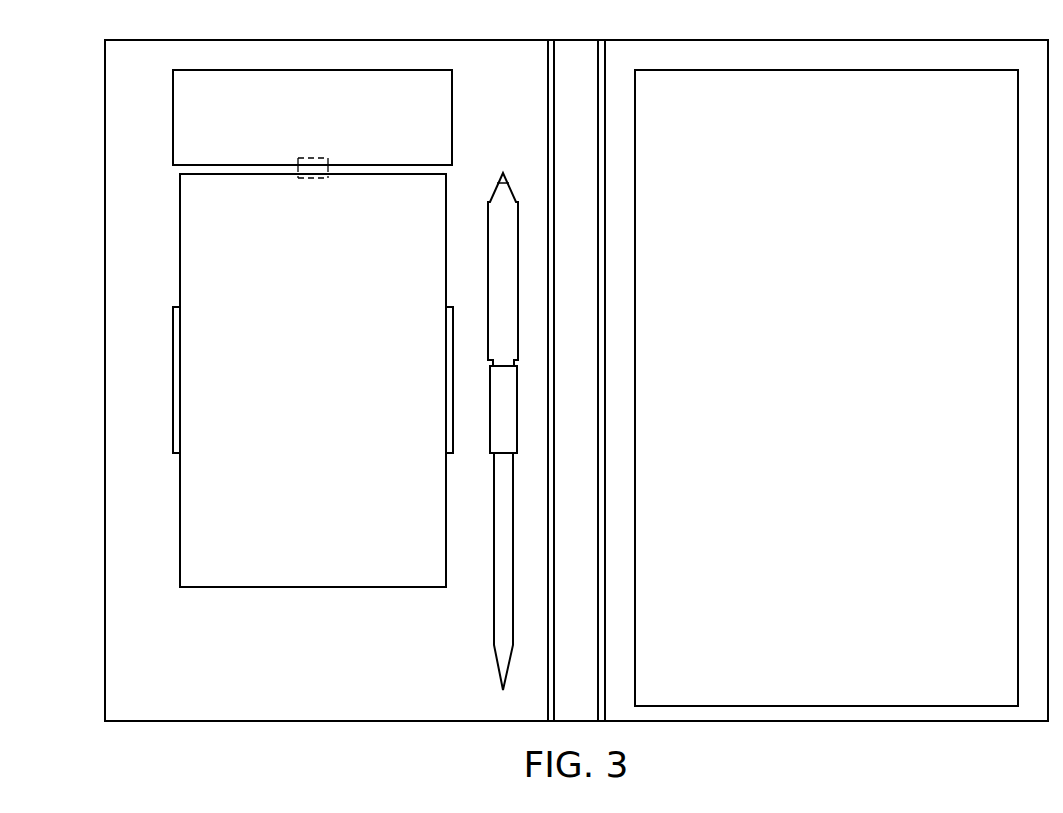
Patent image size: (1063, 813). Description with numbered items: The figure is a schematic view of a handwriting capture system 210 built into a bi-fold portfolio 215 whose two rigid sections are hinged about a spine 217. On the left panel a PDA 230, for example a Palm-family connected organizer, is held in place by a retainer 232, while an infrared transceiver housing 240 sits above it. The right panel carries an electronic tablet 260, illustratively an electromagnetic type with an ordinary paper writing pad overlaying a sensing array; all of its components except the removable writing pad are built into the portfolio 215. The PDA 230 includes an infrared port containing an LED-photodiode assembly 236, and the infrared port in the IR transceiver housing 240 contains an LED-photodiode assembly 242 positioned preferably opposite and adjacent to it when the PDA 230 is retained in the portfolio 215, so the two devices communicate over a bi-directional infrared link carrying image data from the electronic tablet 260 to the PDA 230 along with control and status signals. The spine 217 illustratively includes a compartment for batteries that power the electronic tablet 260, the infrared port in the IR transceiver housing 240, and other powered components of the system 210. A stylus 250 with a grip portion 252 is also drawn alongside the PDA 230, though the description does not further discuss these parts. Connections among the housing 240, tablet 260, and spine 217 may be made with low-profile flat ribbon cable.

The handwriting capture system 210 is at (96, 60).
The bi-fold portfolio 215 is at (326, 380).
The spine 217 is at (565, 40).
The PDA 230 is at (313, 380).
The retainer 232 is at (176, 307).
The LED-photodiode assembly 236 is at (328, 177).
The infrared transceiver housing 240 is at (312, 117).
The LED-photodiode assembly 242 is at (298, 159).
The stylus 250 is at (500, 175).
The stylus grip 252 is at (490, 366).
The electronic tablet 260 is at (826, 388).